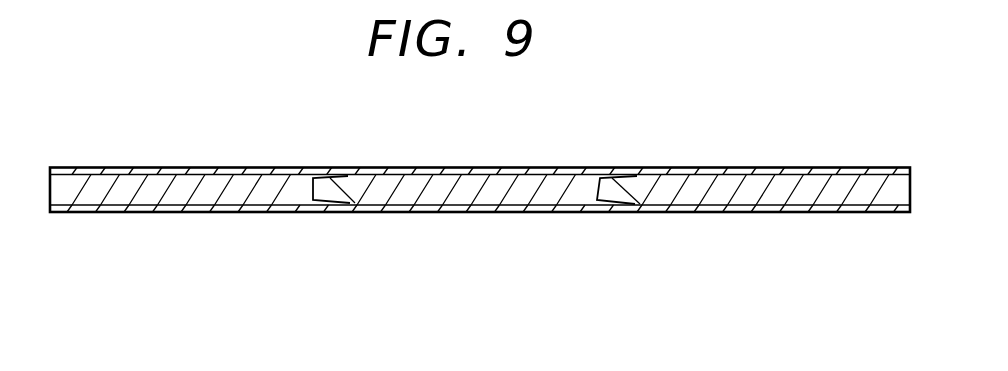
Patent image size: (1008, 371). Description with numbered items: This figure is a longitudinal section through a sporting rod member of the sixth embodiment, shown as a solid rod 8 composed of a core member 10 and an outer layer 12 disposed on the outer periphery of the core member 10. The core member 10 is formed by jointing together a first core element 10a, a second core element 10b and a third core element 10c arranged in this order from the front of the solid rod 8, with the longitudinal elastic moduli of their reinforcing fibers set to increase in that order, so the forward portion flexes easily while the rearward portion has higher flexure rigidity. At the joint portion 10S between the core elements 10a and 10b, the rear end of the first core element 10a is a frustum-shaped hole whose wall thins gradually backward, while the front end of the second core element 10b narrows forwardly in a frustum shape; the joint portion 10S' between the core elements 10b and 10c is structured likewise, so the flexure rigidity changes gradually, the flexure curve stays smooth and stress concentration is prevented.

The solid rod 8 is at (500, 166).
The outer layer 12 is at (287, 168).
The core member 10 is at (760, 296).
The first core element 10a is at (185, 190).
The second core element 10b is at (463, 192).
The third core element 10c is at (732, 190).
The joint portion 10S is at (330, 235).
The joint portion 10S' is at (616, 235).